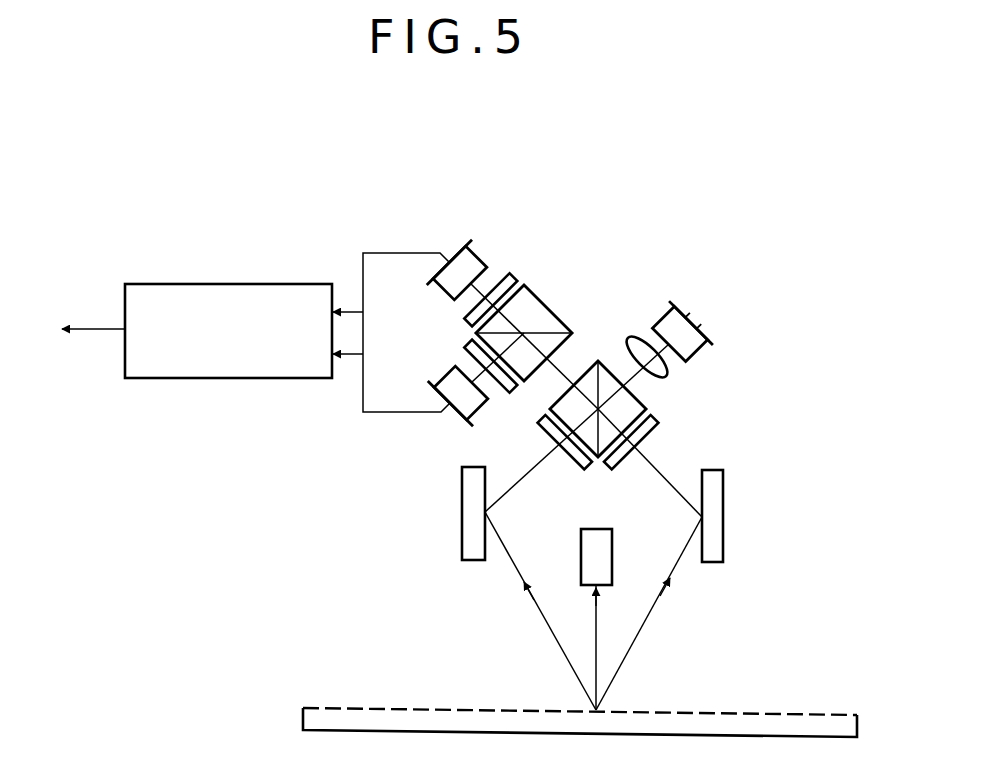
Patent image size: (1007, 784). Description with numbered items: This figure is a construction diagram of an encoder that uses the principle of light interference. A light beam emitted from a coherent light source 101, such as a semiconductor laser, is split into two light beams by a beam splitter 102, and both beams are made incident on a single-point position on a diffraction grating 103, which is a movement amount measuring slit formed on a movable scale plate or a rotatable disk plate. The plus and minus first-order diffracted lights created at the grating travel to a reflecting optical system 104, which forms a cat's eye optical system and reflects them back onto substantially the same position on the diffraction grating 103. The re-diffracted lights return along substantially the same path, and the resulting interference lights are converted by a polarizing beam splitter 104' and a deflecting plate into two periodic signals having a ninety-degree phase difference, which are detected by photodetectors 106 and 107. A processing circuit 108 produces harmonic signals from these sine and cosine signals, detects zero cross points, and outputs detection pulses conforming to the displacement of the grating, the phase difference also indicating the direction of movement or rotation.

The coherent light source 101 is at (702, 350).
The beam splitter 102 is at (599, 363).
The diffraction grating 103 is at (712, 713).
The reflecting optical system 104 is at (623, 537).
The polarizing beam splitter 104' is at (557, 322).
The photodetector 106 is at (483, 244).
The photodetector 107 is at (447, 373).
The processing circuit 108 is at (220, 283).